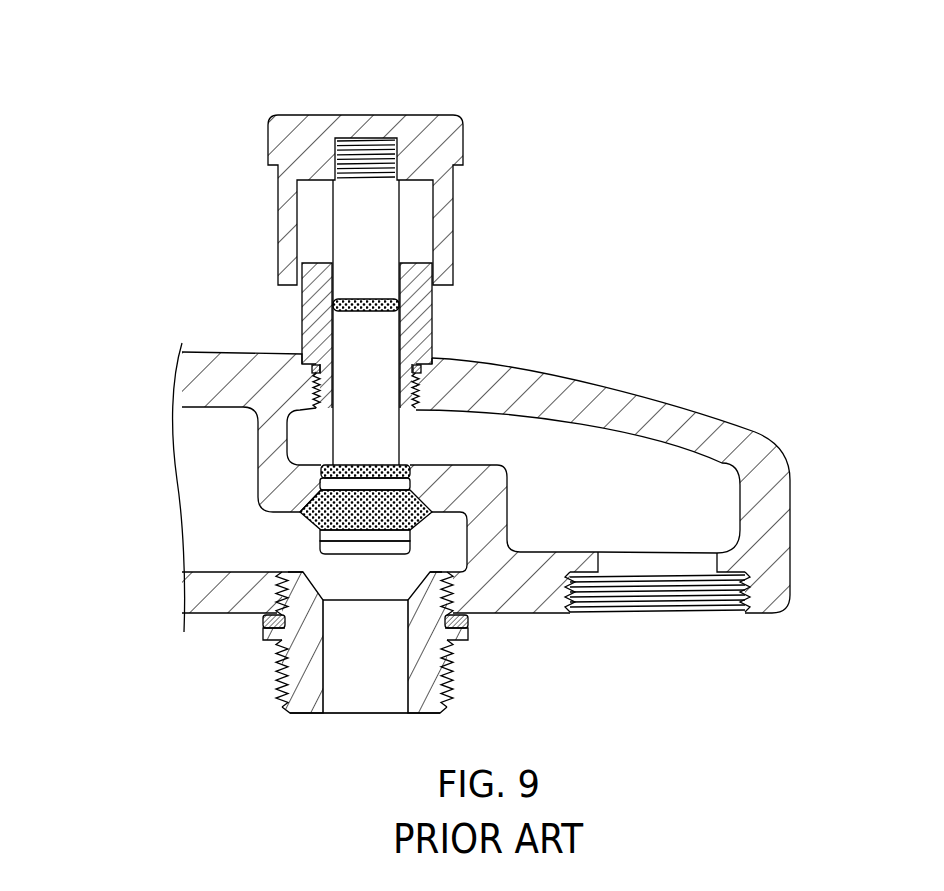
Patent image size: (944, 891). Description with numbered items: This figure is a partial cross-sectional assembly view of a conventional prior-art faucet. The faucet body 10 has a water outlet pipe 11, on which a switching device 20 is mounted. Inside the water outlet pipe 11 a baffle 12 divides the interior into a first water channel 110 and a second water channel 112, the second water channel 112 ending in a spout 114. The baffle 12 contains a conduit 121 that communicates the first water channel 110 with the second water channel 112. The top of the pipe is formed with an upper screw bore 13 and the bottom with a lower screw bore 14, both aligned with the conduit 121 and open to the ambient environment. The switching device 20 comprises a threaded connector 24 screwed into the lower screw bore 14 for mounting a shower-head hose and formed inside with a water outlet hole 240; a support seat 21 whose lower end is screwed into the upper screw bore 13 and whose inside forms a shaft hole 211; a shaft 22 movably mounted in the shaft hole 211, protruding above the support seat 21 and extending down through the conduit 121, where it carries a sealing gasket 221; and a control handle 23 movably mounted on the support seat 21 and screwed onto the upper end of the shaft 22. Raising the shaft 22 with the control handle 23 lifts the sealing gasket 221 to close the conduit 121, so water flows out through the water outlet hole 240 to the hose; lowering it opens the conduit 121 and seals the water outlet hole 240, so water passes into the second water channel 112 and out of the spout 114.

The faucet body 10 is at (462, 498).
The water outlet pipe 11 is at (462, 498).
The first water channel 110 is at (188, 447).
The second water channel 112 is at (703, 505).
The spout 114 is at (717, 560).
The baffle 12 is at (480, 473).
The conduit 121 is at (322, 473).
The sealing gasket 221 is at (243, 519).
The upper screw bore 13 is at (313, 378).
The lower screw bore 14 is at (454, 612).
The switching device 20 is at (321, 243).
The support seat 21 is at (307, 303).
The shaft hole 211 is at (333, 331).
The shaft 22 is at (365, 322).
The control handle 23 is at (418, 118).
The threaded connector 24 is at (321, 687).
The water outlet hole 240 is at (323, 687).